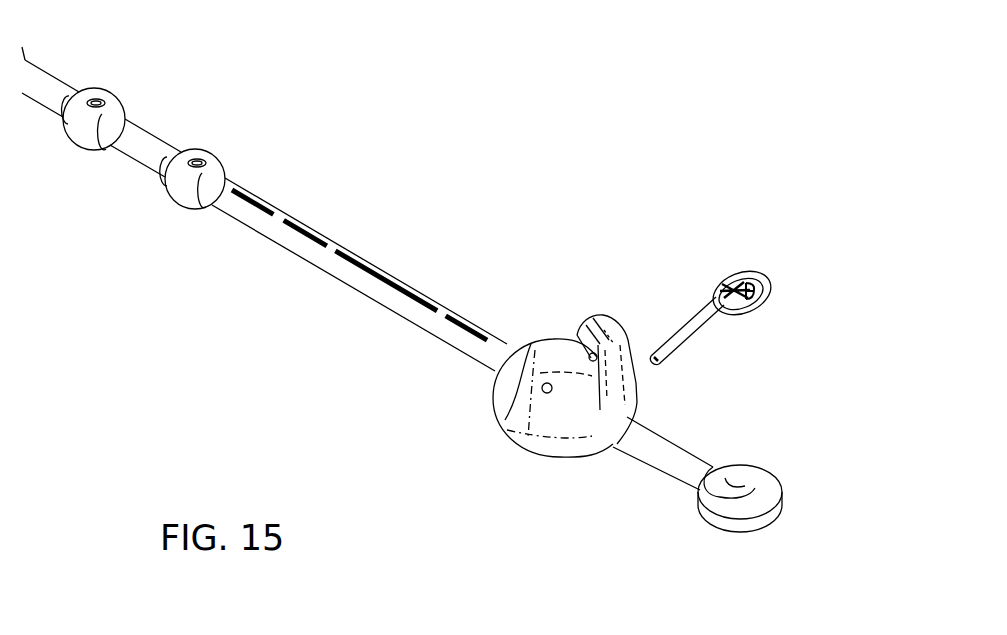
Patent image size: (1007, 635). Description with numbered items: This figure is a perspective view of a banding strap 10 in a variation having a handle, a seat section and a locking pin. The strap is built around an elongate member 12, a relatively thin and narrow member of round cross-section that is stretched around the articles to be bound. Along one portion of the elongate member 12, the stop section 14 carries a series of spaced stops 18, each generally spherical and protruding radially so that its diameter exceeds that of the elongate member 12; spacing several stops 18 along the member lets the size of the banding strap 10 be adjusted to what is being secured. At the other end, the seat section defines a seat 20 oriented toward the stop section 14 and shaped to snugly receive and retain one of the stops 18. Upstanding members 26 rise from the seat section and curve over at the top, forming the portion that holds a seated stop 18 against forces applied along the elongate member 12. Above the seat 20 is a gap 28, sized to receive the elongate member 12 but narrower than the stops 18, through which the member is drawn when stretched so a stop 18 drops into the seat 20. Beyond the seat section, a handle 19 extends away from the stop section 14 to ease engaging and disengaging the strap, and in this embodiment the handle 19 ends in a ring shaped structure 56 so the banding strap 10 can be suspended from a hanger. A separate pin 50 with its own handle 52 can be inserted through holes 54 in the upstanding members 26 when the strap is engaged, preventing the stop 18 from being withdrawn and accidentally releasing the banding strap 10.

The banding strap 10 is at (424, 71).
The elongate member 12 is at (313, 248).
The stop section 14 is at (187, 83).
The stops 18 is at (182, 188).
The handle 19 is at (680, 463).
The seat 20 is at (520, 376).
The upstanding members 26 is at (575, 408).
The gap 28 is at (600, 328).
The pin 50 is at (692, 327).
The handle 52 is at (737, 282).
The holes 54 is at (540, 389).
The ring shaped structure 56 is at (767, 492).